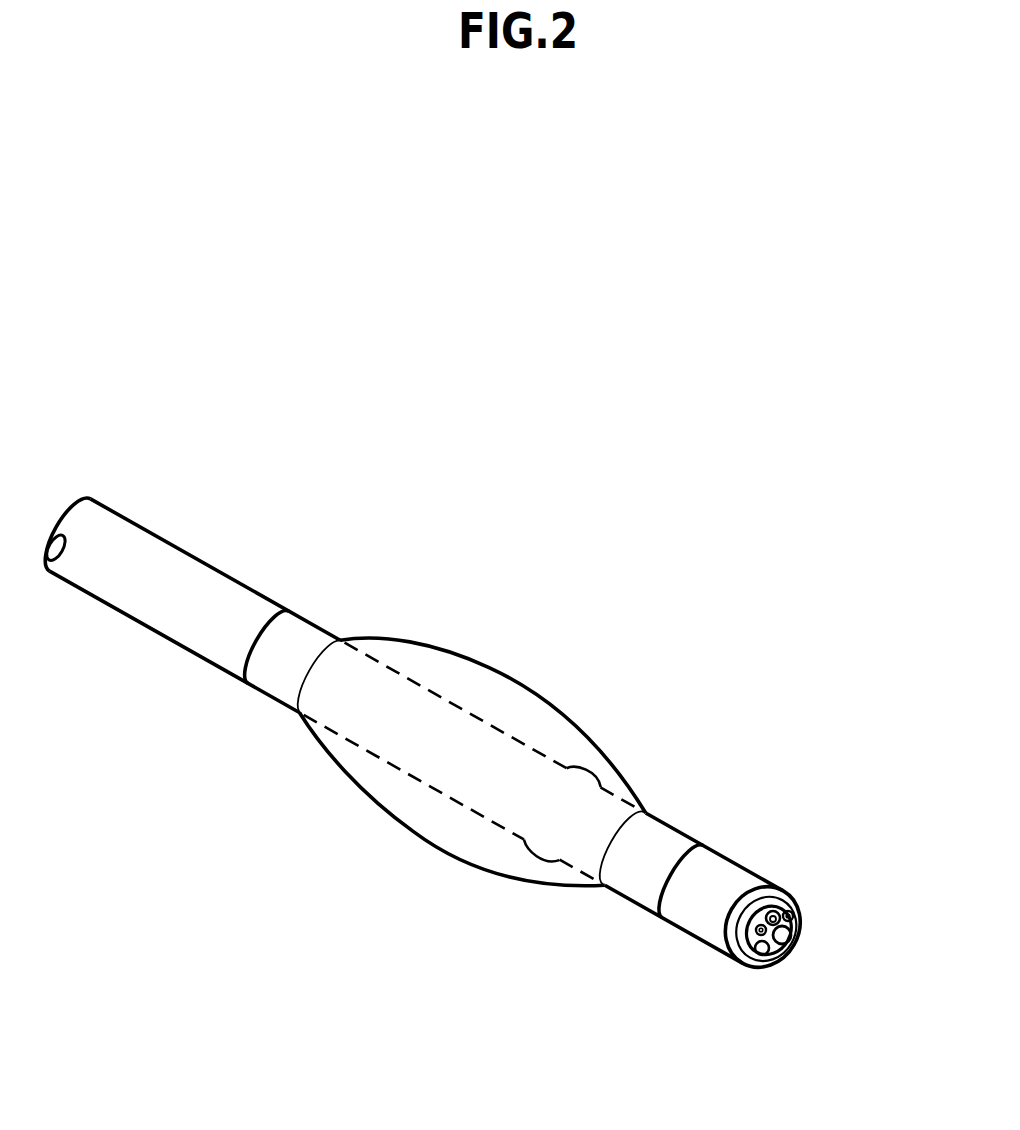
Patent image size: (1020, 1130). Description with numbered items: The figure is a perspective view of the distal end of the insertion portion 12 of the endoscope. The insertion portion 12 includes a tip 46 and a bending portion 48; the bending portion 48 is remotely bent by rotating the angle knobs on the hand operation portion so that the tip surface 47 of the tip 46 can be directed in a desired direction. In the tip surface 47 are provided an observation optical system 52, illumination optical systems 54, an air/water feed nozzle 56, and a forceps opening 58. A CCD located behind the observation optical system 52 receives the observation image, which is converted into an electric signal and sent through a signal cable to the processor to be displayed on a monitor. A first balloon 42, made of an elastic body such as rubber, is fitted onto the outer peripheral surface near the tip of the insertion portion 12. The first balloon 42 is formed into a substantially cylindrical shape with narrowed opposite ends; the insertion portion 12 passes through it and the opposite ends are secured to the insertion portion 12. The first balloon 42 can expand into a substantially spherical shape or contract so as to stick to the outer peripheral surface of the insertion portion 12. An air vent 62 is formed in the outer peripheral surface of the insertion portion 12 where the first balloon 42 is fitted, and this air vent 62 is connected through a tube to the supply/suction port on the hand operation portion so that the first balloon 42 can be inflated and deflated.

The insertion portion 12 is at (218, 535).
The first balloon 42 is at (562, 706).
The tip 46 is at (698, 920).
The tip surface 47 is at (802, 924).
The bending portion 48 is at (142, 598).
The observation optical system 52 is at (773, 911).
The illumination optical systems 54 is at (794, 916).
The air/water feed nozzle 56 is at (760, 956).
The forceps opening 58 is at (790, 940).
The air vent 62 is at (566, 856).